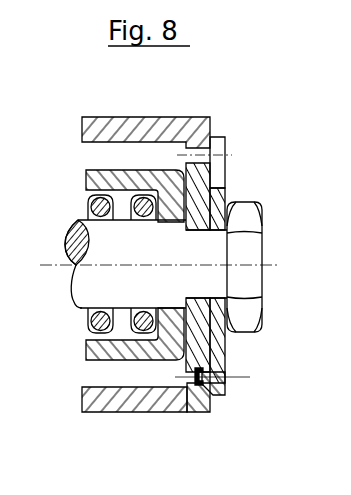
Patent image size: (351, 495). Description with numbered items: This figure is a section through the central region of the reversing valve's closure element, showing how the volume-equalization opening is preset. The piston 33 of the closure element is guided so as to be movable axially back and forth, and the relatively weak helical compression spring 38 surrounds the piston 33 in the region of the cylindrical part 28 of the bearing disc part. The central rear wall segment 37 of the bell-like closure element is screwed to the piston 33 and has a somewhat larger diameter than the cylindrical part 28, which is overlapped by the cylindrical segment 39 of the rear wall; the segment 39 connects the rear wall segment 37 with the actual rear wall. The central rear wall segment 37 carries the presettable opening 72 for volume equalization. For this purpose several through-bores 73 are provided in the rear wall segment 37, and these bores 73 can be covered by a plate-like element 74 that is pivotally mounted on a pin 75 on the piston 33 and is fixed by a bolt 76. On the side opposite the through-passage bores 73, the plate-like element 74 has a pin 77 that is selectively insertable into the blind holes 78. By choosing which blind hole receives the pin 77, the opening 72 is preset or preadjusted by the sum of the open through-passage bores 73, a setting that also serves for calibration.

The cylindrical part 28 is at (97, 356).
The piston 33 is at (82, 295).
The central rear wall segment 37 is at (180, 406).
The helical compression spring 38 is at (88, 326).
The cylindrical segment 39 is at (104, 396).
The presettable opening 72 is at (213, 127).
The through-bores 73 is at (200, 147).
The plate-like element 74 is at (218, 150).
The pin 75 is at (205, 245).
The bolt 76 is at (248, 320).
The pin 77 is at (222, 396).
The blind holes 78 is at (200, 386).